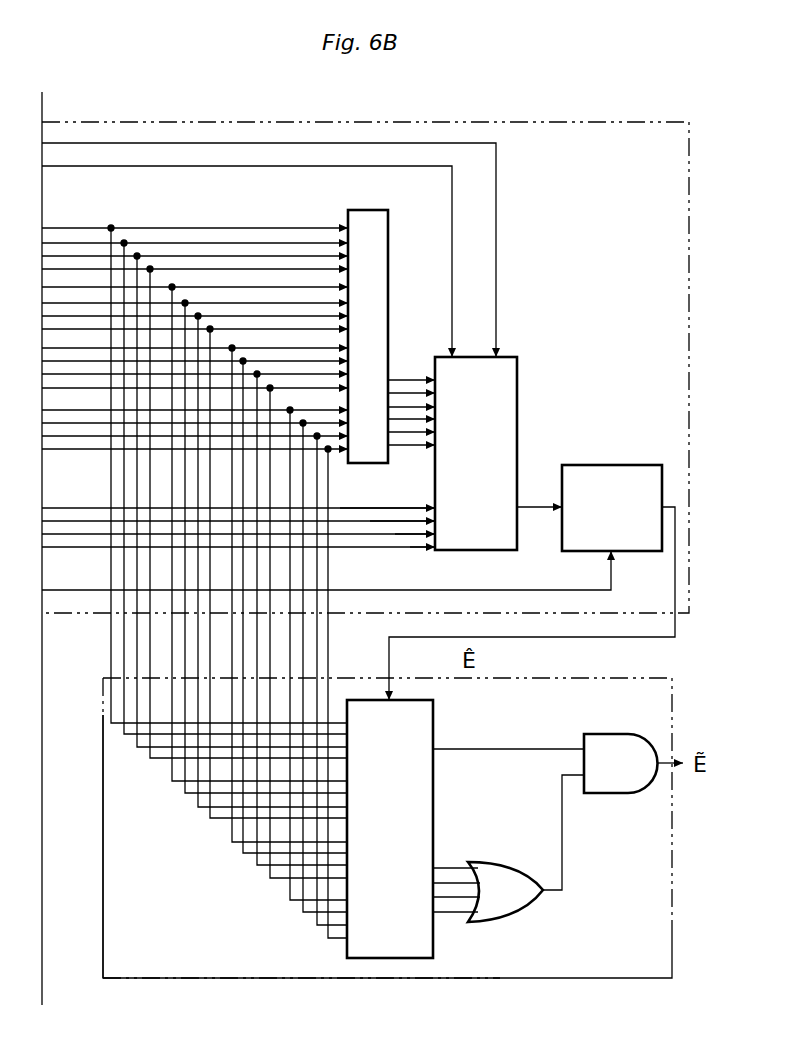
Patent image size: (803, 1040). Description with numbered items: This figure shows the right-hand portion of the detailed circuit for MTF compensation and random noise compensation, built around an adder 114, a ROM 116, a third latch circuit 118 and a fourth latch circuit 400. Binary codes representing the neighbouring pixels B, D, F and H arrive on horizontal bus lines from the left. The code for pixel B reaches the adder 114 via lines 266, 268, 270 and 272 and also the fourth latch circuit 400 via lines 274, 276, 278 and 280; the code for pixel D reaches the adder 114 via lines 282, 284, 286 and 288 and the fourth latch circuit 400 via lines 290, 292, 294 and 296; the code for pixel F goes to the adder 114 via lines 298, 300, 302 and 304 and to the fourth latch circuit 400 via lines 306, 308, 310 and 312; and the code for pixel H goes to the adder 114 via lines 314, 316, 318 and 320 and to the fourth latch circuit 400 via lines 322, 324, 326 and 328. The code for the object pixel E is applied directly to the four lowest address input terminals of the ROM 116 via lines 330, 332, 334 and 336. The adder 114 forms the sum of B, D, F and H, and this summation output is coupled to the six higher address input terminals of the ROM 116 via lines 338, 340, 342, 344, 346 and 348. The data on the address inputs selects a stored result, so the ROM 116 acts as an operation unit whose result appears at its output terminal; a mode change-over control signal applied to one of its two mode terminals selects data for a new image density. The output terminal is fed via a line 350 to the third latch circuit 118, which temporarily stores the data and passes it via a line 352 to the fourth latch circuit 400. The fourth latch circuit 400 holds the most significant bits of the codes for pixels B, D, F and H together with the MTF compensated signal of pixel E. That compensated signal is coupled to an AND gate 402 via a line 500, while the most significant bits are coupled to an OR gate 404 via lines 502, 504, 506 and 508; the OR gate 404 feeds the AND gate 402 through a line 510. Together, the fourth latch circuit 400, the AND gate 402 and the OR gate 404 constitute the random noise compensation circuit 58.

The random noise compensation circuit 58 is at (102, 921).
The adder 114 is at (388, 210).
The read only memory (ROM) 116 is at (517, 378).
The third latch circuit 118 is at (624, 464).
The line 266 is at (100, 268).
The line 268 is at (90, 255).
The line 270 is at (75, 242).
The line 272 is at (55, 227).
The line 274 is at (150, 758).
The line 276 is at (137, 747).
The line 278 is at (124, 734).
The line 280 is at (112, 722).
The line 282 is at (247, 329).
The line 284 is at (222, 316).
The line 286 is at (202, 303).
The line 288 is at (182, 287).
The line 290 is at (210, 818).
The line 292 is at (198, 807).
The line 294 is at (185, 793).
The line 296 is at (172, 781).
The line 298 is at (88, 470).
The line 300 is at (320, 374).
The line 302 is at (300, 361).
The line 304 is at (285, 348).
The line 306 is at (270, 878).
The line 308 is at (257, 865).
The line 310 is at (243, 853).
The line 312 is at (232, 842).
The line 314 is at (113, 590).
The line 316 is at (118, 523).
The line 318 is at (95, 510).
The line 320 is at (92, 452).
The line 322 is at (328, 938).
The line 324 is at (317, 925).
The line 326 is at (303, 912).
The line 328 is at (290, 900).
The line 330 is at (420, 548).
The line 332 is at (405, 536).
The line 334 is at (380, 523).
The line 336 is at (345, 510).
The line 338 is at (414, 445).
The line 340 is at (405, 432).
The line 342 is at (426, 419).
The line 344 is at (418, 407).
The line 346 is at (408, 393).
The line 348 is at (394, 380).
The line 350 is at (540, 506).
The line 352 is at (600, 645).
The fourth latch circuit 400 is at (433, 725).
The AND gate 402 is at (628, 734).
The OR gate 404 is at (530, 915).
The line 500 is at (536, 749).
The line 502 is at (445, 866).
The line 504 is at (458, 880).
The line 506 is at (462, 904).
The line 508 is at (450, 917).
The line 510 is at (562, 830).